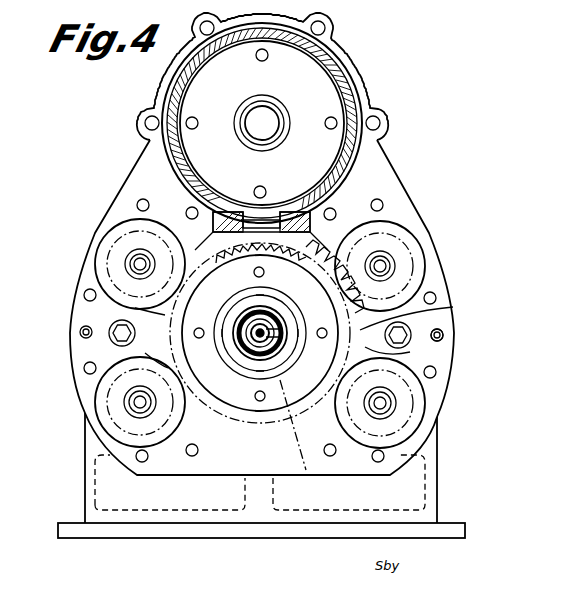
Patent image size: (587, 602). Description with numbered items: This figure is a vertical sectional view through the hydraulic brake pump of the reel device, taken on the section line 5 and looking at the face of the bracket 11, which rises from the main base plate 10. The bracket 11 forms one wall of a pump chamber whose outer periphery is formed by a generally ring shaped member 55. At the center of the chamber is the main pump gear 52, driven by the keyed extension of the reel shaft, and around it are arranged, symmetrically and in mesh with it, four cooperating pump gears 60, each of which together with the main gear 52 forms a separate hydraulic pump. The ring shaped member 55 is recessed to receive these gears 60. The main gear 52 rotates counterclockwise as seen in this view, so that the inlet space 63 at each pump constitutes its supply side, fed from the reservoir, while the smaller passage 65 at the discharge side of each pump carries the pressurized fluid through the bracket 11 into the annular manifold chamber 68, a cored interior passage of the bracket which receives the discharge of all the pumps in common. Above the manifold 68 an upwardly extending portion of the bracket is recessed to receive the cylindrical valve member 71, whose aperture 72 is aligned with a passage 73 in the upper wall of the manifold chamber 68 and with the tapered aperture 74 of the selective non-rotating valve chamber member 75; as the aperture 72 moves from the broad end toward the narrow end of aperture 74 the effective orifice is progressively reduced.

The section line 5- 5 is at (291, 395).
The main base plate 10 is at (200, 538).
The bracket member 11 is at (85, 487).
The main pump gear 52 is at (445, 309).
The ring shaped member 55 is at (443, 349).
The pump gears 60 is at (112, 243).
The inlet space 63 is at (140, 314).
The smaller passage 65 is at (125, 386).
The annular manifold chamber 68 is at (290, 233).
The cylindrical valve member 71 is at (292, 232).
The aperture 72 is at (271, 231).
The passage 73 is at (252, 233).
The aperture 74 is at (249, 231).
The valve chamber member 75 is at (197, 197).